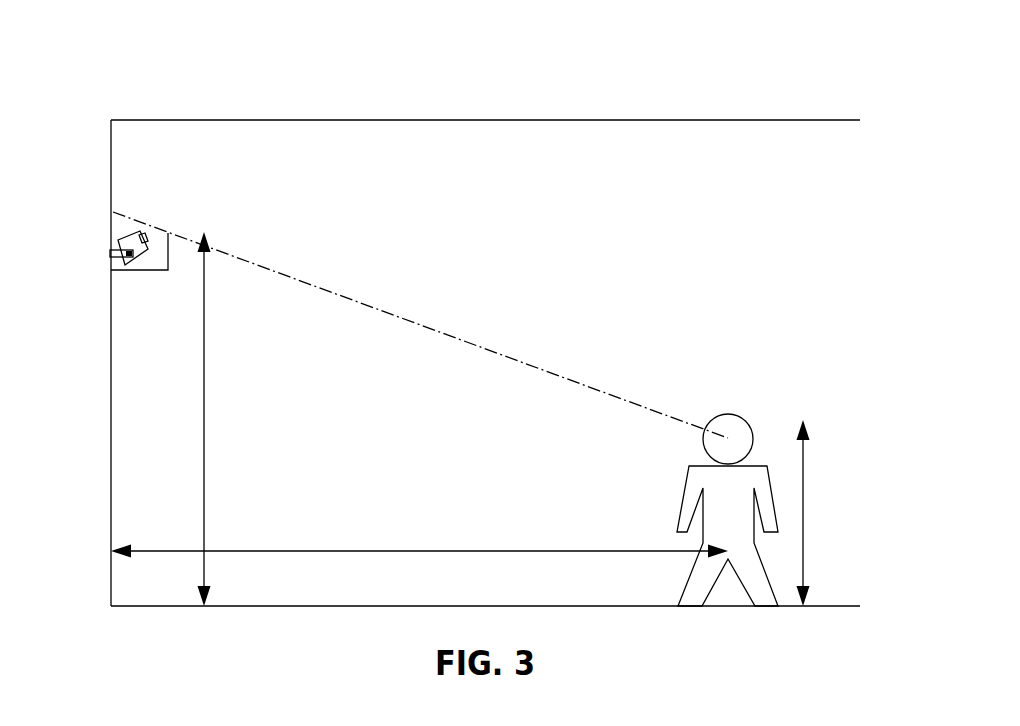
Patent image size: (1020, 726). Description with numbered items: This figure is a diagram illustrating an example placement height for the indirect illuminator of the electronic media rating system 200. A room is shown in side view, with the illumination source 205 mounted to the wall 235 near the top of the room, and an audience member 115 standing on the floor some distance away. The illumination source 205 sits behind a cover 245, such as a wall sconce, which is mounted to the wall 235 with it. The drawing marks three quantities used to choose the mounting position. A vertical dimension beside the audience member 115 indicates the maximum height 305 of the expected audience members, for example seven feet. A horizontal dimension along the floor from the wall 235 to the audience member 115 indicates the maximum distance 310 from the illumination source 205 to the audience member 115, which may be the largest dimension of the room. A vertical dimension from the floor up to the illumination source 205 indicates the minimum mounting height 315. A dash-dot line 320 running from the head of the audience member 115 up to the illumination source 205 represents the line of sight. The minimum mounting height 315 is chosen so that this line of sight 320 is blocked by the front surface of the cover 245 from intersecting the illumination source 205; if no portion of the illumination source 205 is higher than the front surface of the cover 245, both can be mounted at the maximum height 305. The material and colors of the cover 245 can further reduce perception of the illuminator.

The electronic media rating system 200 is at (716, 56).
The illumination source 205 is at (131, 236).
The cover 245 is at (168, 250).
The wall 235 is at (111, 317).
The line of sight 320 is at (408, 320).
The minimum mounting height 315 is at (204, 418).
The maximum distance 310 is at (392, 551).
The maximum height 305 is at (803, 490).
The audience member 115 is at (685, 490).